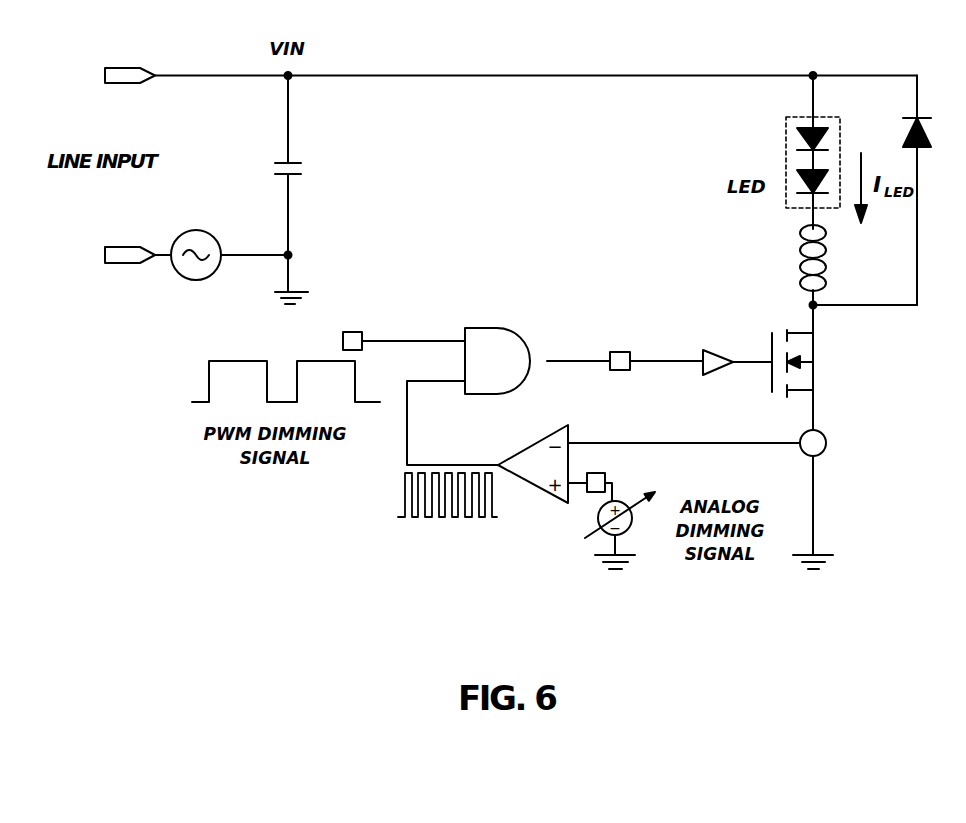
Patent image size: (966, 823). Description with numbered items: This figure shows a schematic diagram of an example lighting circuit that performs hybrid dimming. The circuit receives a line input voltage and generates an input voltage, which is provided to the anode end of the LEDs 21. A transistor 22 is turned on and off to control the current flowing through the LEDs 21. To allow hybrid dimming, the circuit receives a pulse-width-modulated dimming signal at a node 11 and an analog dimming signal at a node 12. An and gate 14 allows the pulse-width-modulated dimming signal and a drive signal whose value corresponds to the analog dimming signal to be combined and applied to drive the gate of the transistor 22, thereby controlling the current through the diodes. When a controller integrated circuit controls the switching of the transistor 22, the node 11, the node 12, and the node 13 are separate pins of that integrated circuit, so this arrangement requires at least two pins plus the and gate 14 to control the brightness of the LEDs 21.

The node 11 is at (353, 332).
The node 12 is at (597, 473).
The node 13 is at (625, 352).
The and gate 14 is at (497, 361).
The LEDs 21 is at (786, 143).
The transistor 22 is at (823, 372).